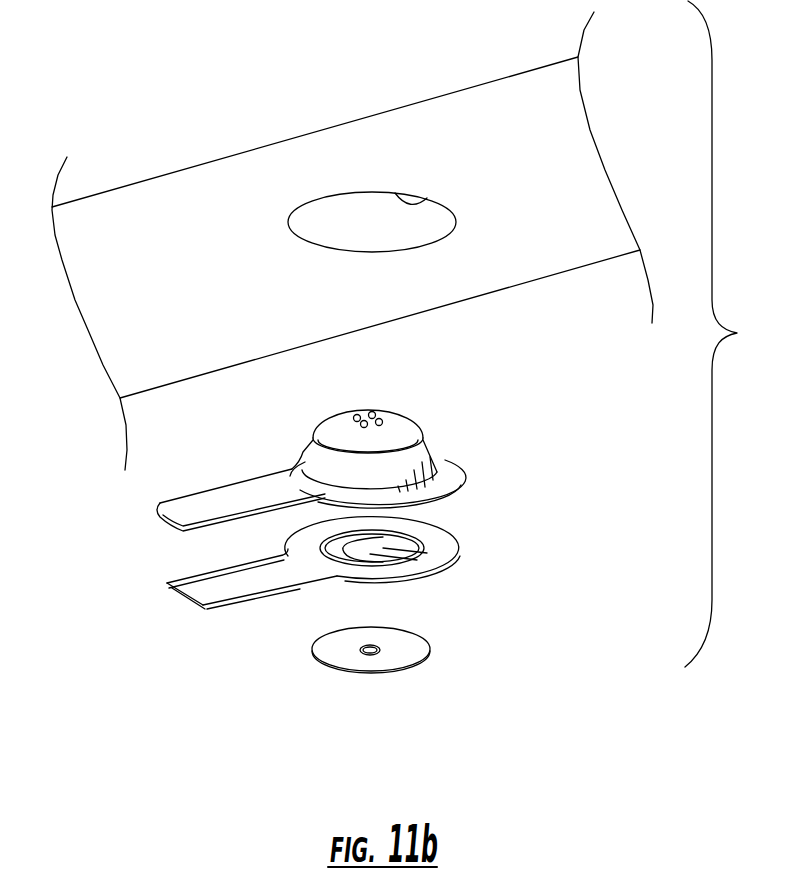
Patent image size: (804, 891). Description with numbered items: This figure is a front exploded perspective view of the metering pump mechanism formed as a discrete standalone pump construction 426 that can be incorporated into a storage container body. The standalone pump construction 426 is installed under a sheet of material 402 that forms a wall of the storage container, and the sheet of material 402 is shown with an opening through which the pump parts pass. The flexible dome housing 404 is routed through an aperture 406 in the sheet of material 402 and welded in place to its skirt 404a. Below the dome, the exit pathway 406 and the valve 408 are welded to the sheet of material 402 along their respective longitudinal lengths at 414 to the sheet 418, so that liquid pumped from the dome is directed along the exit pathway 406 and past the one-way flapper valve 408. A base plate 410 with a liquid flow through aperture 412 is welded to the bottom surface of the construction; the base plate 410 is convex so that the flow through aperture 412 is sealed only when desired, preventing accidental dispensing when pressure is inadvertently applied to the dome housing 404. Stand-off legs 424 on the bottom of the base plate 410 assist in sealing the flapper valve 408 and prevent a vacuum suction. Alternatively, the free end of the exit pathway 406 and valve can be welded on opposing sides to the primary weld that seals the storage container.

The sheet of material 402 is at (193, 182).
The flexible dome housing 404 is at (350, 427).
The skirt 404a is at (444, 460).
The aperture / exit pathway 406 is at (427, 198).
The valve 408 is at (430, 552).
The base plate 410 is at (352, 665).
The liquid flow through aperture 412 is at (380, 652).
The longitudinal weld locations 414 is at (203, 603).
The sheet 418 is at (188, 507).
The stand-off legs 424 is at (377, 675).
The standalone pump construction 426 is at (167, 700).